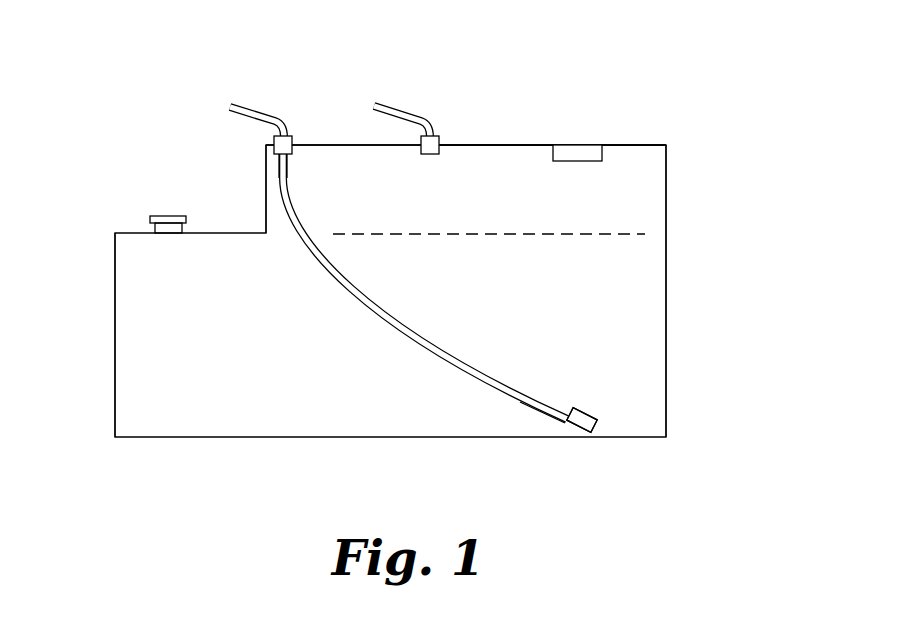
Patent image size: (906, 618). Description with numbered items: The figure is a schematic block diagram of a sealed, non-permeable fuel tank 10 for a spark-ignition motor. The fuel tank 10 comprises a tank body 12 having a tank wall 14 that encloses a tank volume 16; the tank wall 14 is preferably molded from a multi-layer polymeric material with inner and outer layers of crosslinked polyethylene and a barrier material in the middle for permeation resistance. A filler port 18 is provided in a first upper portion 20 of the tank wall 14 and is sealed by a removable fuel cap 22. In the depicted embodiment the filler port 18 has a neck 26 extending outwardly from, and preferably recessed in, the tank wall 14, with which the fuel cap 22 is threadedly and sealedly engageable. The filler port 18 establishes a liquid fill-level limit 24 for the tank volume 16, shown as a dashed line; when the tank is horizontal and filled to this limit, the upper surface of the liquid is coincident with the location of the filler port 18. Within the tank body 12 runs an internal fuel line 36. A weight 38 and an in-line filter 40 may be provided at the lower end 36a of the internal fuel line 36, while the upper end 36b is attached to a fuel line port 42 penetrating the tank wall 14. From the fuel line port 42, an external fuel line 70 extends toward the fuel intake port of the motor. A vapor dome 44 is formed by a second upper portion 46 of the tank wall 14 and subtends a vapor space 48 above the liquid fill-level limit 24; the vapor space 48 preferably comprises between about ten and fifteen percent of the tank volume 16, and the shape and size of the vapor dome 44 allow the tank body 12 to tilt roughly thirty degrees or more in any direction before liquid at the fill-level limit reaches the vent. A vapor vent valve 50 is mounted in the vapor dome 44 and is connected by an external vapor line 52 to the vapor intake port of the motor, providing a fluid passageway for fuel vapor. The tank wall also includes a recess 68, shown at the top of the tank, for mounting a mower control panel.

The fuel tank 10 is at (413, 282).
The tank body 12 is at (196, 443).
The tank wall 14 is at (115, 340).
The tank volume 16 is at (619, 318).
The filler port 18 is at (155, 187).
The first upper portion 20 is at (242, 241).
The fuel cap 22 is at (168, 216).
The liquid fill-level limit 24 is at (488, 234).
The neck 26 is at (183, 231).
The internal fuel line 36 is at (423, 322).
The lower end 36a is at (533, 408).
The upper end 36b is at (290, 165).
The weight 38 is at (573, 433).
The in-line filter 40 is at (586, 420).
The fuel line port 42 is at (293, 140).
The vapor dome 44 is at (517, 144).
The second upper portion 46 is at (482, 112).
The vapor space 48 is at (620, 193).
The vapor vent valve 50 is at (430, 155).
The external vapor line 52 is at (392, 105).
The recess 68 is at (588, 150).
The external fuel line 70 is at (245, 103).